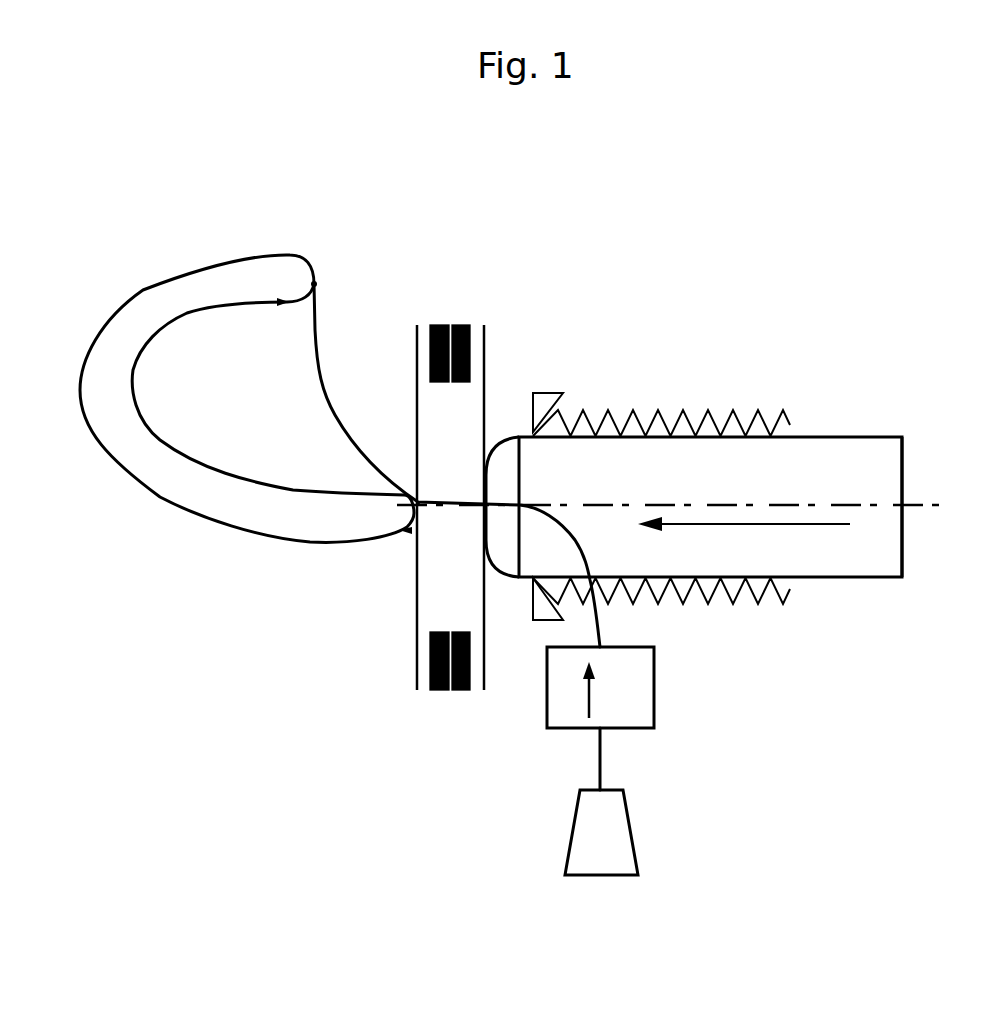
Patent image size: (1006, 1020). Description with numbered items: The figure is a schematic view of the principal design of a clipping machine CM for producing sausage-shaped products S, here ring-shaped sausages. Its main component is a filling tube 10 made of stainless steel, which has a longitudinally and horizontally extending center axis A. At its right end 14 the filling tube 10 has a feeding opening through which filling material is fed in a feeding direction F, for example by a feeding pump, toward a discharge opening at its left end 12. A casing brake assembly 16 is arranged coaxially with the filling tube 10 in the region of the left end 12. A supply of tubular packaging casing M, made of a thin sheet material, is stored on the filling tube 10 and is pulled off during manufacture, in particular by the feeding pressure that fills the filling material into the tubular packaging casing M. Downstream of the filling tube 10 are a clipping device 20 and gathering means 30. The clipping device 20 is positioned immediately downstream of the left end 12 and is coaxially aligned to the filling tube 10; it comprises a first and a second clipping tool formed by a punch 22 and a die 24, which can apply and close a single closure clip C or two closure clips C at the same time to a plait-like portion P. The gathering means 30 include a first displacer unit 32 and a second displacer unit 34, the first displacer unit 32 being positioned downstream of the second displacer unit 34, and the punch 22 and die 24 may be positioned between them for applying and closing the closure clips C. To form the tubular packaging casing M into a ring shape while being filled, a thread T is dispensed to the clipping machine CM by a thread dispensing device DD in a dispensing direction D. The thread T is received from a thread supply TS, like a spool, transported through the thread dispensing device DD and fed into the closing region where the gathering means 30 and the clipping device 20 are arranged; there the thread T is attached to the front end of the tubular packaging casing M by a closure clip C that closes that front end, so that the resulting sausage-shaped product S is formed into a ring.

The sausage-shaped product S is at (133, 290).
The closure clip C is at (318, 283).
The thread T is at (316, 377).
The plait-like portion P is at (448, 505).
The clipping device 20 is at (465, 285).
The punch 22 is at (470, 353).
The die 24 is at (433, 660).
The clipping machine CM is at (637, 258).
The filling tube 10 is at (828, 435).
The left end 12 is at (520, 487).
The right end 14 is at (905, 467).
The casing brake assembly 16 is at (553, 392).
The tubular packaging casing M is at (737, 413).
The center axis A is at (953, 510).
The feeding direction F is at (744, 539).
The gathering means 30 is at (252, 658).
The first displacer unit 32 is at (417, 557).
The second displacer unit 34 is at (487, 593).
The thread dispensing device DD is at (668, 690).
The dispensing direction D is at (606, 690).
The thread supply TS is at (630, 812).